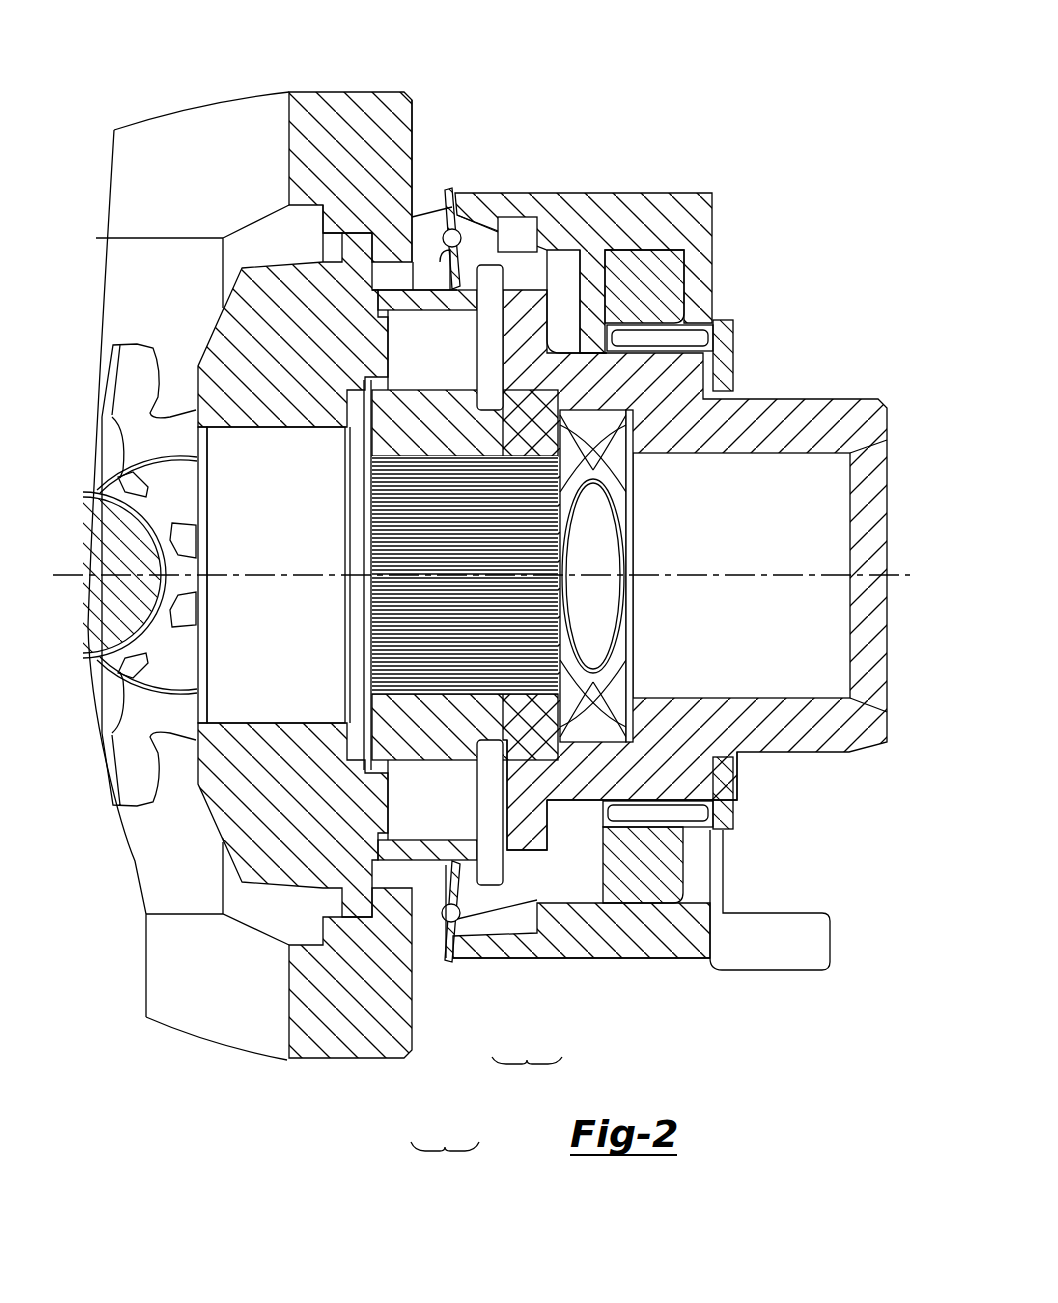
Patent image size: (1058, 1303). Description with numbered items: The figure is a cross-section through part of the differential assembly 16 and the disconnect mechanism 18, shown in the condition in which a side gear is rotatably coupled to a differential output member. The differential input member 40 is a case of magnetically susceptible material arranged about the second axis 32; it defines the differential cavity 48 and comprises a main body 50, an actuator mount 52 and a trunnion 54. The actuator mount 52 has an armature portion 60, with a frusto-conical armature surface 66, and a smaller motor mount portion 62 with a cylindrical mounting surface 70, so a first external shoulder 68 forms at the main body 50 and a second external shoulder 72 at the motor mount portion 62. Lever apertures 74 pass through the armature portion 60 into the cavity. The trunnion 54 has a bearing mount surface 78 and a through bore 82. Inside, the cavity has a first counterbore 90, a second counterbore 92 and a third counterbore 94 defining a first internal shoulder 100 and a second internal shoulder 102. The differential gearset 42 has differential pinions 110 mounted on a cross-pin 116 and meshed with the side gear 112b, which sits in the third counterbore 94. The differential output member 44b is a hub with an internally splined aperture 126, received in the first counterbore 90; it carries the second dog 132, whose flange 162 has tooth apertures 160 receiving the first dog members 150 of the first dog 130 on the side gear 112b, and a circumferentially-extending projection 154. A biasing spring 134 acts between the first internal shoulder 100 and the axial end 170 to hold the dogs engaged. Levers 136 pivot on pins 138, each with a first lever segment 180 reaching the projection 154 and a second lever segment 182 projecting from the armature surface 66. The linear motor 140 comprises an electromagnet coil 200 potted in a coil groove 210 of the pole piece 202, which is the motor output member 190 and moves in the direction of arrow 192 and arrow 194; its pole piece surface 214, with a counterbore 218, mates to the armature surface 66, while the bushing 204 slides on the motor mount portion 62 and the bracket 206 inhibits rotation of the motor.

The differential assembly 16 is at (122, 984).
The disconnect mechanism 18 is at (734, 177).
The second axis 32 is at (74, 575).
The differential input member 40 is at (337, 108).
The differential gearset 42 is at (118, 328).
The differential output member 44b is at (455, 710).
The differential cavity 48 is at (133, 261).
The main body 50 is at (339, 1062).
The actuator mount 52 is at (527, 1076).
The trunnion 54 is at (831, 740).
The armature portion 60 is at (479, 920).
The motor mount portion 62 is at (591, 806).
The armature surface 66 is at (448, 205).
The first external shoulder 68 is at (413, 105).
The mounting surface 70 is at (610, 790).
The second external shoulder 72 is at (560, 320).
The lever apertures 74 is at (422, 231).
The bearing mount surface 78 is at (817, 399).
The through bore 82 is at (805, 525).
The first counterbore 90 is at (649, 451).
The second counterbore 92 is at (372, 280).
The third counterbore 94 is at (333, 247).
The first internal shoulder 100 is at (632, 724).
The second internal shoulder 102 is at (530, 810).
The differential pinions 110 is at (137, 766).
The side gear 112b is at (250, 835).
The cross-pin 116 is at (123, 609).
The internally splined aperture 126 is at (410, 535).
The first dog 130 is at (382, 340).
The second dog 132 is at (413, 434).
The biasing spring 134 is at (614, 502).
The levers 136 is at (445, 1165).
The pins 138 is at (463, 917).
The linear motor 140 is at (657, 940).
The first dog members 150 is at (373, 800).
The circumferentially-extending projection 154 is at (470, 877).
The tooth apertures 160 is at (447, 351).
The flange 162 is at (434, 752).
The axial end 170 is at (614, 658).
The first lever segment 180 is at (437, 964).
The second lever segment 182 is at (464, 964).
The motor output member 190 is at (670, 207).
The arrow 192 is at (145, 35).
The second axial direction 194 is at (547, 35).
The electromagnet coil 200 is at (667, 872).
The pole piece 202 is at (615, 940).
The bushing 204 is at (733, 780).
The bracket 206 is at (797, 950).
The coil groove 210 is at (686, 270).
The pole piece surface 214 is at (473, 196).
The counterbore 218 is at (515, 226).